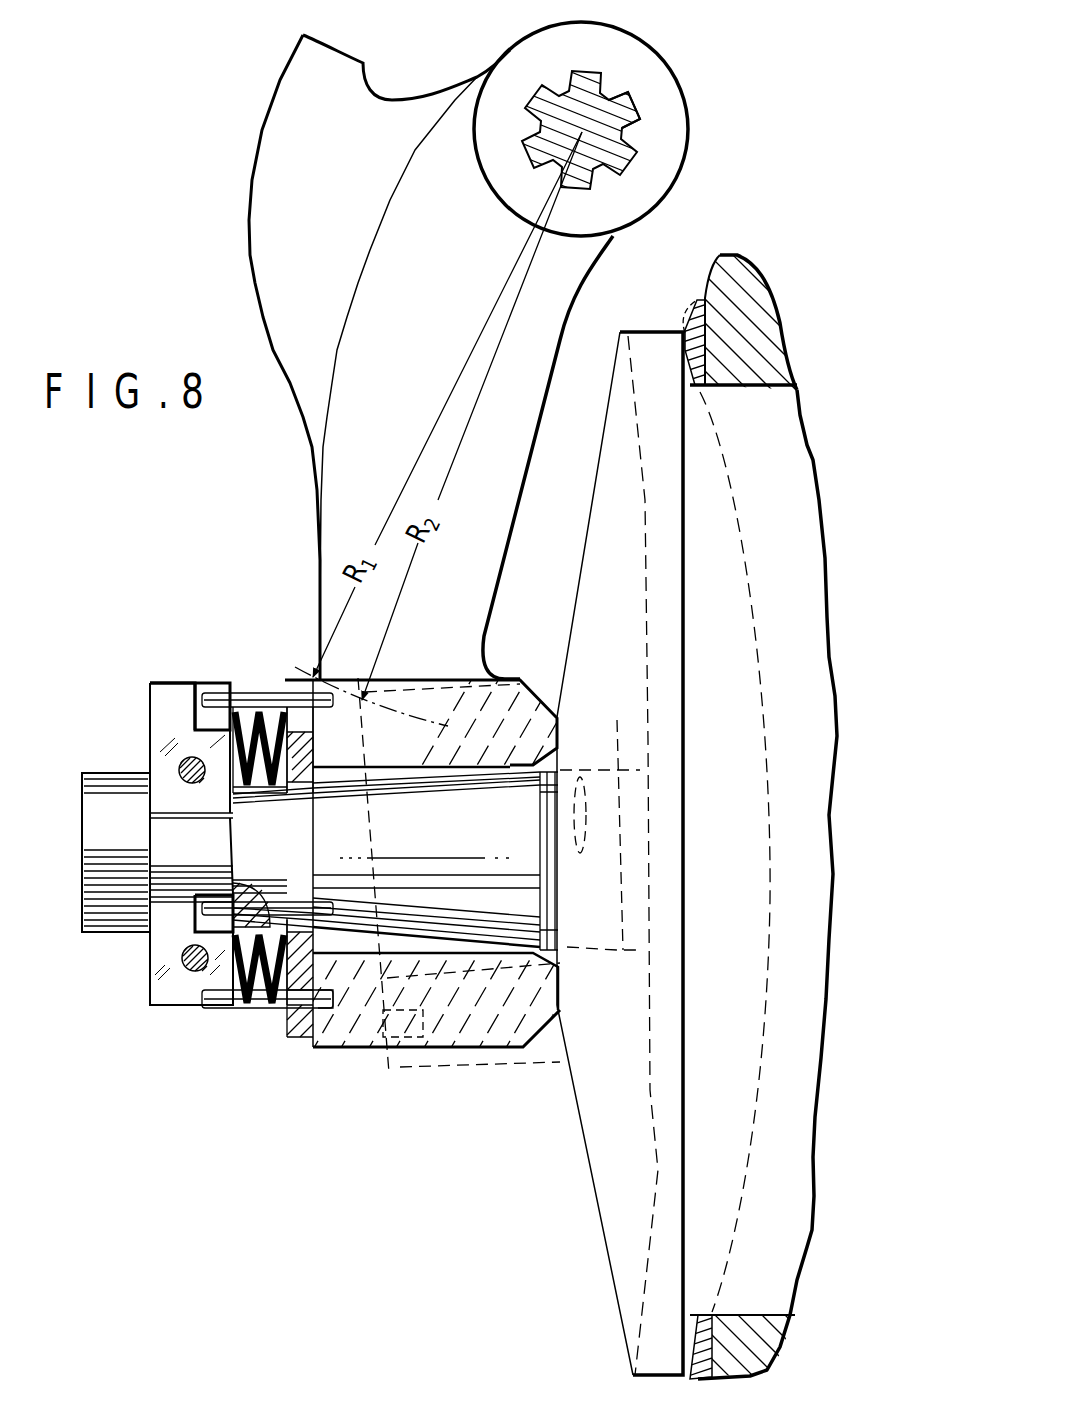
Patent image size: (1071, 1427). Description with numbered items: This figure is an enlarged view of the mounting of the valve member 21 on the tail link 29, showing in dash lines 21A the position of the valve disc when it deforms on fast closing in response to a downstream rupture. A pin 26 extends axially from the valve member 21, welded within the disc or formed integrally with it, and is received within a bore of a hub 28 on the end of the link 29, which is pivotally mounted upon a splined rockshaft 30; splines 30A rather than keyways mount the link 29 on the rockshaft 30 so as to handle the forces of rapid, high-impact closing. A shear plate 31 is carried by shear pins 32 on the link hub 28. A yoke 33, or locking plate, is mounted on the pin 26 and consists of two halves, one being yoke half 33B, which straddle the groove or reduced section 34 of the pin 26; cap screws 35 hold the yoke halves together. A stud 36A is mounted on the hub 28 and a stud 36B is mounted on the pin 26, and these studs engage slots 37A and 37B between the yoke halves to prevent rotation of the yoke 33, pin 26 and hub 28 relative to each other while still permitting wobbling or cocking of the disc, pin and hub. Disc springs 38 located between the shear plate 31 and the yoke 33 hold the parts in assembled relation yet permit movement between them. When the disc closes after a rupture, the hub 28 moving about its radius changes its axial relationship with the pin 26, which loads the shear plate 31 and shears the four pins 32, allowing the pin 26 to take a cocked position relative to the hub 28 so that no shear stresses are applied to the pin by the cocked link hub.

The valve member 21 is at (592, 472).
The dash lines showing deformed disc 21A is at (748, 540).
The pin 26 is at (468, 836).
The hub 28 is at (375, 1050).
The link 29 is at (416, 366).
The splined rockshaft 30 is at (607, 122).
The splines 30A is at (637, 160).
The shear plate 31 is at (298, 1027).
The shear pins 32 is at (333, 1000).
The yoke 33 is at (183, 1008).
The yoke half 33B is at (165, 722).
The groove or reduced section 34 is at (200, 854).
The cap screws 35 is at (180, 765).
The stud 36A is at (258, 692).
The stud 36B is at (195, 900).
The slot 37A is at (207, 688).
The slot 37B is at (220, 925).
The disc springs 38 is at (262, 1000).